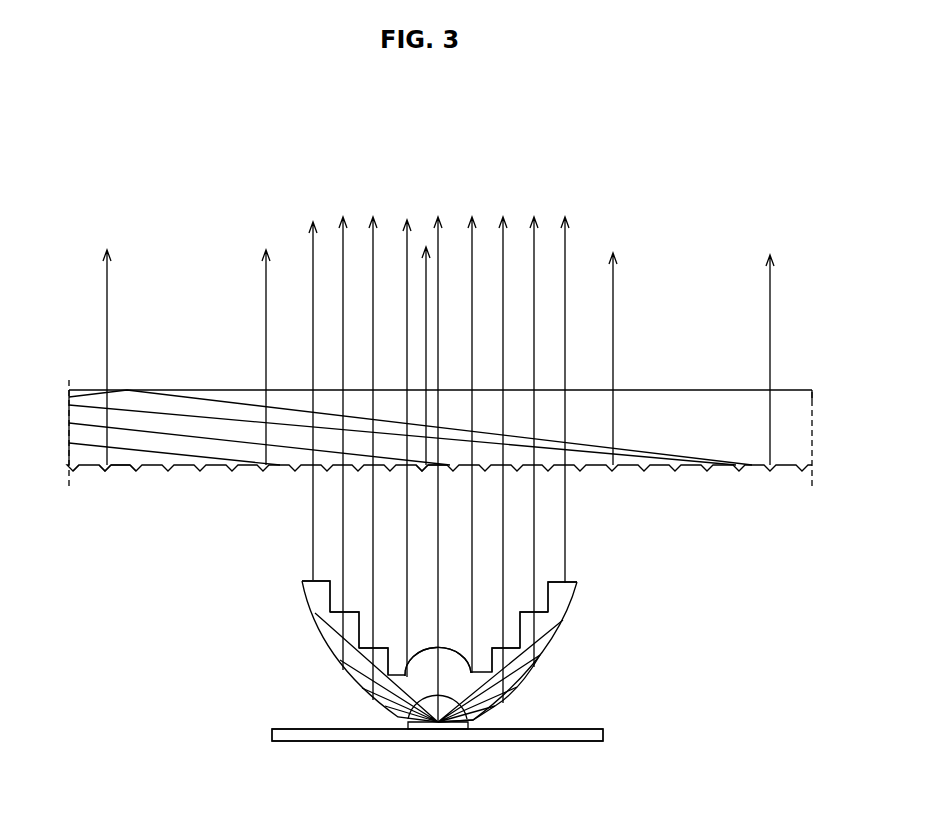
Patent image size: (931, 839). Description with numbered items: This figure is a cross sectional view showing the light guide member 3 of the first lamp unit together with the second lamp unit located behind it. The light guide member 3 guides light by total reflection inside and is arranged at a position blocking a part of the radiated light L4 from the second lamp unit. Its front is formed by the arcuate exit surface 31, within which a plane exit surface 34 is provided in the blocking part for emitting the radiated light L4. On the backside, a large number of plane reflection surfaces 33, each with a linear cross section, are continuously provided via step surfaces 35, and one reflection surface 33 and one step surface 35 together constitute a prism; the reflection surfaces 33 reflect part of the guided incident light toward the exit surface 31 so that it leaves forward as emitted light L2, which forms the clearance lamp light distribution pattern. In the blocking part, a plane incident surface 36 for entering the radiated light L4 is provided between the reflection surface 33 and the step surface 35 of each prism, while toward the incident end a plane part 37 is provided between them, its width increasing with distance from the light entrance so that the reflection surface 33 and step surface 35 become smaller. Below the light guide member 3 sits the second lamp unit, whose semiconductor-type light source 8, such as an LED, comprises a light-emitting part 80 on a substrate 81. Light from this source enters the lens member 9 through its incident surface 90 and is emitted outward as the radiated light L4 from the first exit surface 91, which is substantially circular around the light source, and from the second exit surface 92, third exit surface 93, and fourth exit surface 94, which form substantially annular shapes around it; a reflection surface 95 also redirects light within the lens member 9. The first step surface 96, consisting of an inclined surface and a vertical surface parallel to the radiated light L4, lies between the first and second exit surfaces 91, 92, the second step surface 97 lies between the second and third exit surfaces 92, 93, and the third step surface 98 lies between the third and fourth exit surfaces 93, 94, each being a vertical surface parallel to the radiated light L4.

The light guide member 3 is at (797, 383).
The exit surface 31 is at (85, 388).
The reflection surface 33 is at (118, 466).
The plane exit surface 34 is at (325, 390).
The step surface 35 is at (104, 469).
The plane incident surface 36 is at (345, 466).
The plane part 37 is at (88, 466).
The semiconductor-type light source 8 is at (261, 752).
The light-emitting part 80 is at (410, 729).
The substrate 81 is at (338, 742).
The lens member 9 is at (281, 600).
The incident surface 90 is at (473, 722).
The first exit surface 91 is at (474, 669).
The second exit surface 92 is at (512, 640).
The third exit surface 93 is at (543, 612).
The fourth exit surface 94 is at (574, 580).
The reflection surface 95 is at (520, 688).
The first step surface 96 is at (360, 662).
The second step surface 97 is at (345, 622).
The third step surface 98 is at (335, 582).
The emitted light L2 is at (110, 301).
The radiated light L4 is at (373, 280).